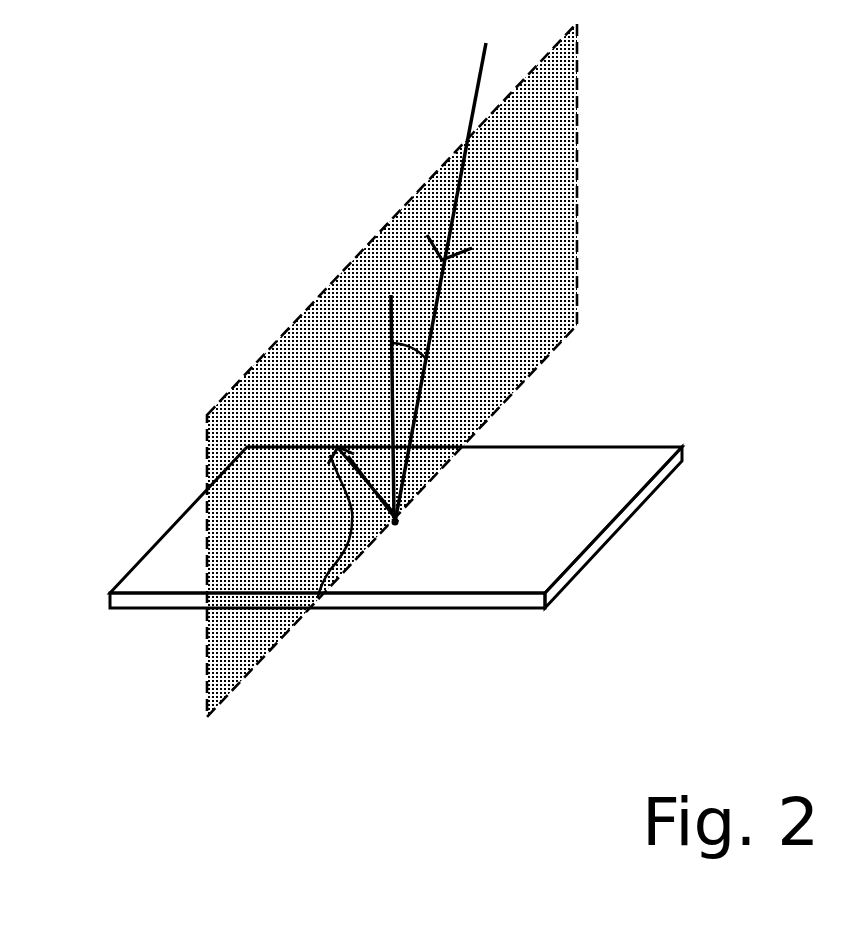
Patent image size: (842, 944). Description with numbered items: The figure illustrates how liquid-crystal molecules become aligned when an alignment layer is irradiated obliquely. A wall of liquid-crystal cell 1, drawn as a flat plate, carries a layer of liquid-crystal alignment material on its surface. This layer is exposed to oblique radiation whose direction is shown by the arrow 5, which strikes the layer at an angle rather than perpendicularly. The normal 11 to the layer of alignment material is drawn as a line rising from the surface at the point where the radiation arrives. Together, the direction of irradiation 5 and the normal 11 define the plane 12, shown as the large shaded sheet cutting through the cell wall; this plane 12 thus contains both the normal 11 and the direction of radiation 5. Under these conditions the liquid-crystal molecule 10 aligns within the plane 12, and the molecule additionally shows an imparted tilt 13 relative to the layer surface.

The wall of liquid-crystal cell 1 is at (587, 463).
The direction of irradiation 5 is at (438, 313).
The liquid-crystal molecule 10 is at (345, 481).
The normal 11 is at (391, 319).
The plane 12 is at (552, 118).
The imparted tilt 13 is at (318, 597).